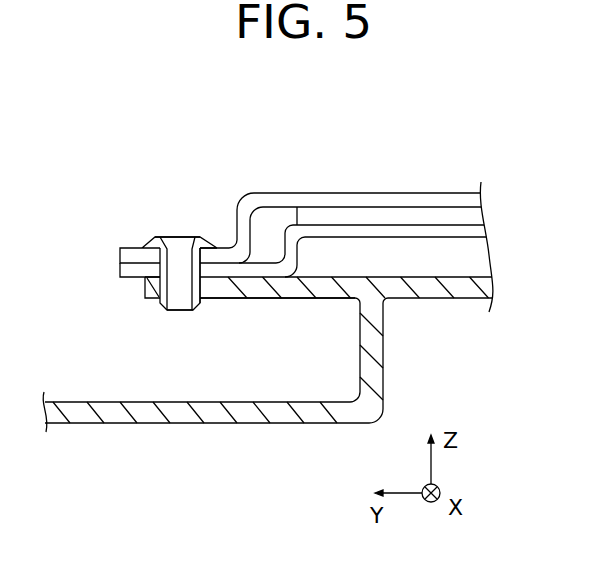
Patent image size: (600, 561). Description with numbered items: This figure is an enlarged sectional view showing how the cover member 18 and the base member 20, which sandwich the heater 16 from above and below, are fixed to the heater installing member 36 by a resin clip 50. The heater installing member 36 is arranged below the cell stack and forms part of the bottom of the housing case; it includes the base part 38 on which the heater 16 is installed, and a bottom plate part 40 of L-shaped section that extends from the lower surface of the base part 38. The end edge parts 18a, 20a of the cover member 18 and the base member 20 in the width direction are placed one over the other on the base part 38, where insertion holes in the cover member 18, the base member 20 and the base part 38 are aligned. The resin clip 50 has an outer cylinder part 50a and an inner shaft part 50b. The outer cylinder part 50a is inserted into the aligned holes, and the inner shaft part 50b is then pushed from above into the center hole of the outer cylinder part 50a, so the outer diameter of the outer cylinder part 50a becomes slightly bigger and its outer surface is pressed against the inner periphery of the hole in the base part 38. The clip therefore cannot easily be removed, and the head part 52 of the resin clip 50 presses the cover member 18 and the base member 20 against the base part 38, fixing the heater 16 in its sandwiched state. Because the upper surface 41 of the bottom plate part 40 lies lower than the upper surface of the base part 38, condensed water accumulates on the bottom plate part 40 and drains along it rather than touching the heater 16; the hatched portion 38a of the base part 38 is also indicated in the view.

The heater 16 is at (470, 215).
The cover member 18 is at (424, 191).
The end edge part of the cover member 18a is at (127, 248).
The base member 20 is at (290, 225).
The end edge part of the base member 20a is at (137, 278).
The heater installing member 36 is at (389, 354).
The base part 38 is at (453, 277).
The lower surface of upper wall portion 38a is at (305, 297).
The bottom plate part 40 is at (283, 423).
The upper surface of the bottom plate part 41 is at (273, 401).
The resin clip 50 is at (181, 236).
The outer cylinder part 50a is at (202, 284).
The inner shaft part 50b is at (178, 310).
The head part 52 is at (206, 236).